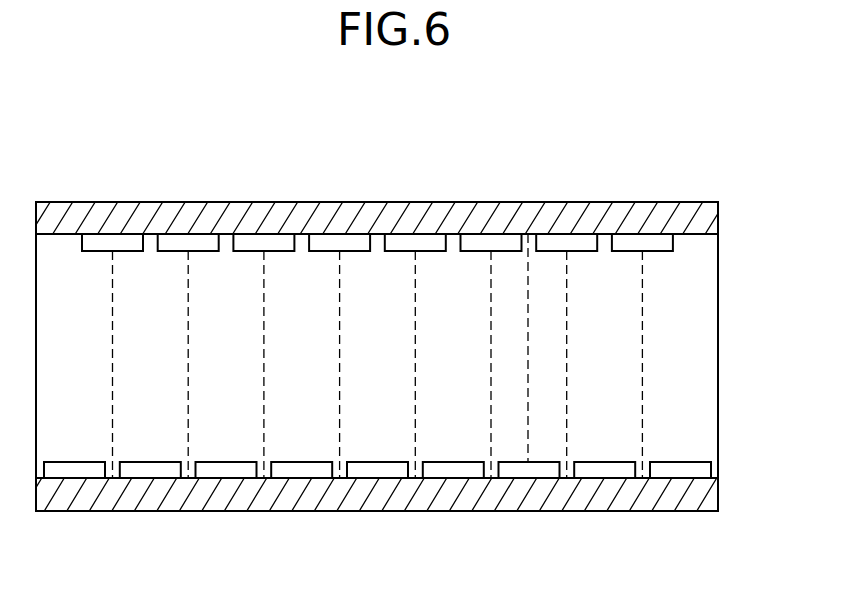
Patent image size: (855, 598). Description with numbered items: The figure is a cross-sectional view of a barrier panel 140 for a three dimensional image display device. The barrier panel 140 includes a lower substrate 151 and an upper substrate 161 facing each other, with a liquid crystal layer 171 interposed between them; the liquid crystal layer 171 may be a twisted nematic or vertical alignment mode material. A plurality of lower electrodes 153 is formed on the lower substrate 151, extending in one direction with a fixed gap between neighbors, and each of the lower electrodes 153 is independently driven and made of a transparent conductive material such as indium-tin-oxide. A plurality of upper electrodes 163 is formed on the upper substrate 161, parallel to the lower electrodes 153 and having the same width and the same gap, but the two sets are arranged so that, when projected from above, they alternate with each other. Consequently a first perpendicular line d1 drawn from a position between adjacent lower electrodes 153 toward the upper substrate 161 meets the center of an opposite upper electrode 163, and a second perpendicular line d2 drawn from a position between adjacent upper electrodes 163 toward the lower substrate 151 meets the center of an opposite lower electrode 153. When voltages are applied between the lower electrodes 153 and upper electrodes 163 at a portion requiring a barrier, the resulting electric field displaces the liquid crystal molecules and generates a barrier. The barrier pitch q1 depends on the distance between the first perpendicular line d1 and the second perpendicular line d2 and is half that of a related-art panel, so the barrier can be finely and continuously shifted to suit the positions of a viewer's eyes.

The barrier panel 140 is at (718, 117).
The upper substrate 161 is at (585, 207).
The upper electrodes 163 is at (658, 238).
The liquid crystal layer 171 is at (718, 370).
The lower electrodes 153 is at (711, 466).
The lower substrate 151 is at (667, 505).
The barrier pitch q1 is at (528, 282).
The first perpendicular line d1 is at (490, 355).
The second perpendicular line d2 is at (529, 356).